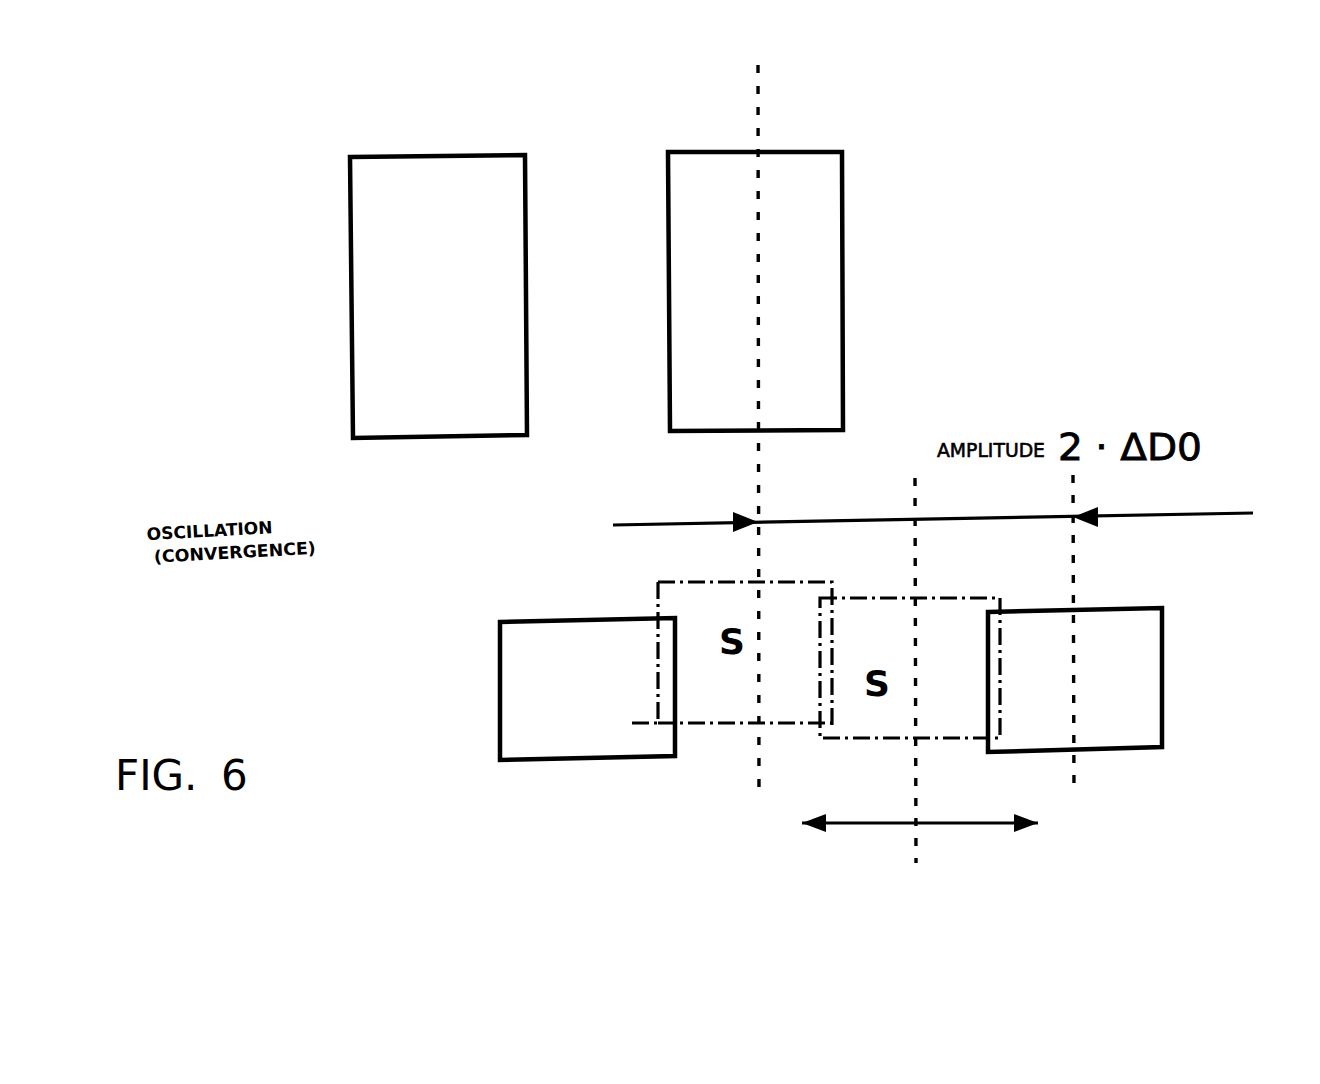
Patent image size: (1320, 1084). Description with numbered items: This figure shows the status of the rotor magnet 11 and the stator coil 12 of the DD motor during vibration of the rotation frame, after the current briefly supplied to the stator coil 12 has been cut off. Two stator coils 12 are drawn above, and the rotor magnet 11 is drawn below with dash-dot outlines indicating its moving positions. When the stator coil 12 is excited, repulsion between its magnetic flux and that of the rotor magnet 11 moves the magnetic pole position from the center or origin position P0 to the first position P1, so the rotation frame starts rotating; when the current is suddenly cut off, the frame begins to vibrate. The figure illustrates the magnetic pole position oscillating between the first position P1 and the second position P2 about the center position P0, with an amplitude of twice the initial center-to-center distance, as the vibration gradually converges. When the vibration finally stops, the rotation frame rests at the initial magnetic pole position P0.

The rotor magnet 11 is at (500, 688).
The stator coil 12 is at (522, 245).
The center position P0 is at (920, 707).
The first position P1 is at (761, 456).
The second position P2 is at (1076, 661).